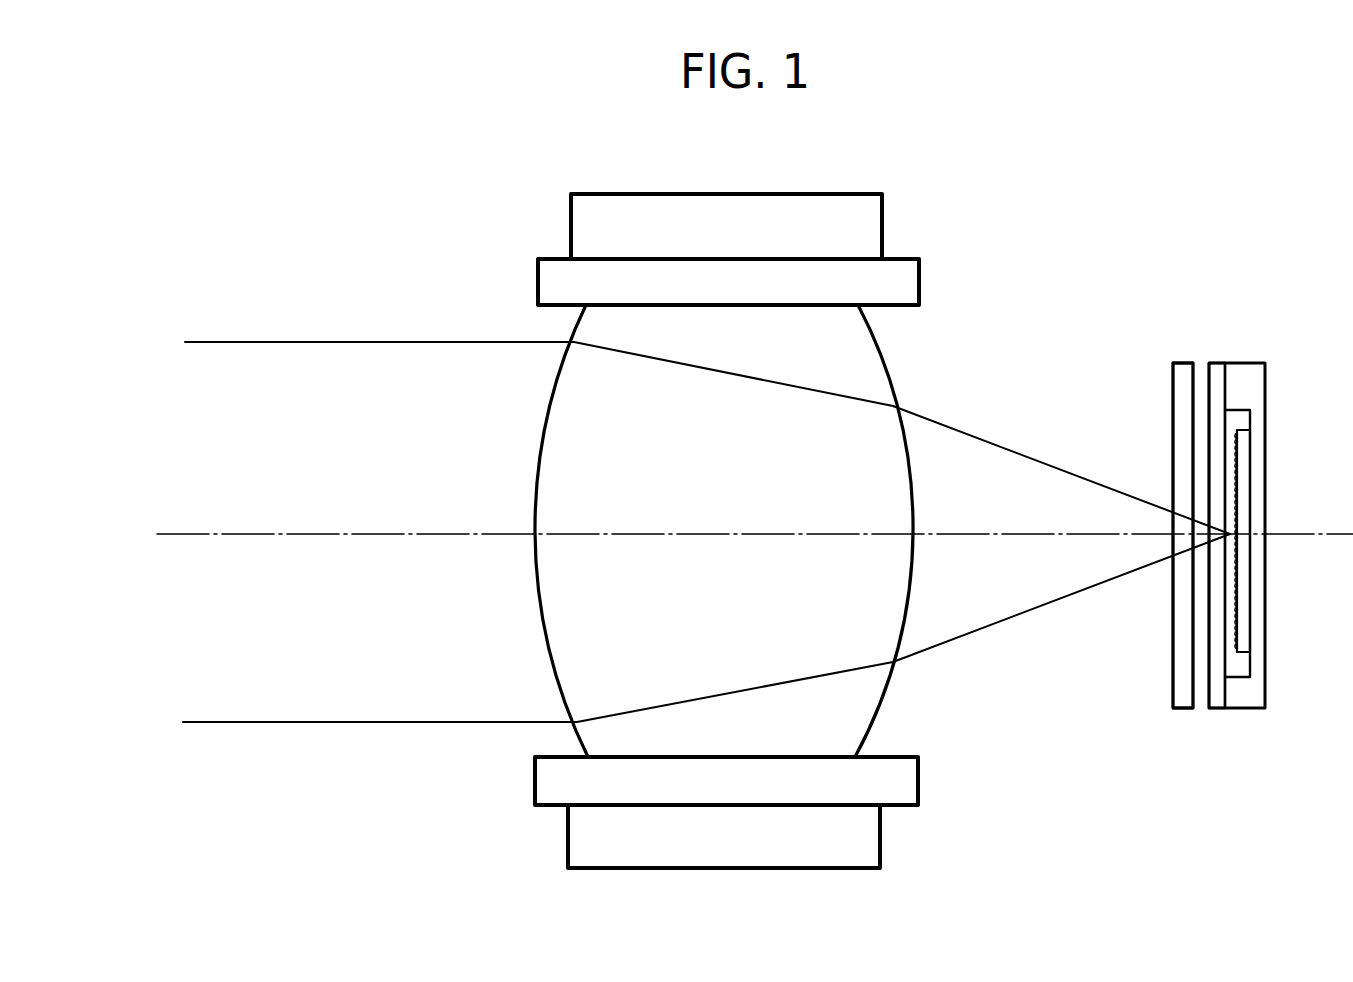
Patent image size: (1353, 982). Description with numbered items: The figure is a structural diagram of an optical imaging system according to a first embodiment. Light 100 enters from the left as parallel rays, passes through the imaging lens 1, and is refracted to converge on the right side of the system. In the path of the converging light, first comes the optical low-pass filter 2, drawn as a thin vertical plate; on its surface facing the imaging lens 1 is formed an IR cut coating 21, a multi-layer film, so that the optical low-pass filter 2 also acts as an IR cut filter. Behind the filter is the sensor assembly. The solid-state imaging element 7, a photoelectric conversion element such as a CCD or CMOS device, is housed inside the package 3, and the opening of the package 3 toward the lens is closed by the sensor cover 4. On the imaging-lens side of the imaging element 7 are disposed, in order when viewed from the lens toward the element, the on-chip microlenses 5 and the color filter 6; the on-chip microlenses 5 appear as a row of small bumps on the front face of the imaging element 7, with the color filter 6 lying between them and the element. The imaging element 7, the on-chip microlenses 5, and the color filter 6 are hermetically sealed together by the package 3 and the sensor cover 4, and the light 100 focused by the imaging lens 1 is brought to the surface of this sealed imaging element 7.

The imaging lens 1 is at (870, 353).
The incident light 100 is at (368, 340).
The optical low-pass filter 2 is at (1184, 362).
The IR cut coating 21 is at (1172, 394).
The package 3 is at (1265, 385).
The sensor cover 4 is at (1216, 362).
The on-chip microlenses 5 is at (1235, 593).
The color filter 6 is at (1232, 625).
The solid-state imaging element 7 is at (1247, 622).